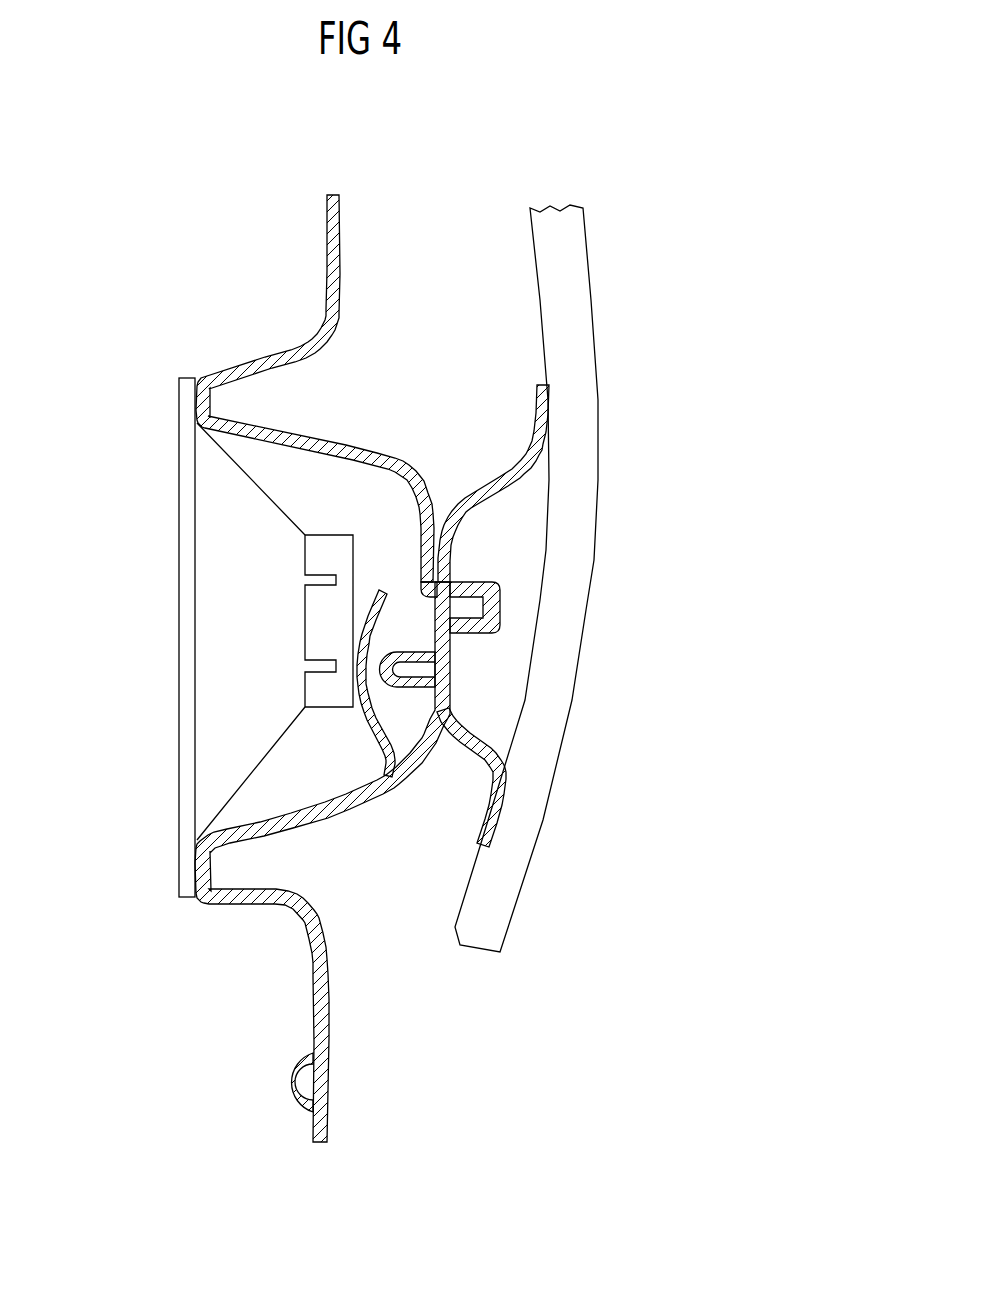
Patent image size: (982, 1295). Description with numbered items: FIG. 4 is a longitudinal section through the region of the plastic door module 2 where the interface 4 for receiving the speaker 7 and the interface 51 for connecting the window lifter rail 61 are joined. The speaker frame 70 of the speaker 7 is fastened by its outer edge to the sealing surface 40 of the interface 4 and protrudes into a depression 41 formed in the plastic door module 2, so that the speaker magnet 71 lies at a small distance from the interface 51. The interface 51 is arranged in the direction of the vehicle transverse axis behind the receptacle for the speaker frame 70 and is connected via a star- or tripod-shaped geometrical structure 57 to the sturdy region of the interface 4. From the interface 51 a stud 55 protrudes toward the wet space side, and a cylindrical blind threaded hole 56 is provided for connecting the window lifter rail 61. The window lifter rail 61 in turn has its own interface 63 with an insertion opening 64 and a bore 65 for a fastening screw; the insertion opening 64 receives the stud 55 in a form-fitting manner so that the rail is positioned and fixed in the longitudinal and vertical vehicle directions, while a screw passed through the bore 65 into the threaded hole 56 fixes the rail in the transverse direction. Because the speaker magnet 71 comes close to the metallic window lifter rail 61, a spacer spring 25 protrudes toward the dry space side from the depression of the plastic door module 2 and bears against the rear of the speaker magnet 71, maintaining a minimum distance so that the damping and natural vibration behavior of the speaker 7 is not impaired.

The plastic door module 2 is at (335, 240).
The interface for receiving the speaker 4 is at (250, 957).
The speaker 7 is at (179, 637).
The spacer spring 25 is at (368, 720).
The sealing surface 40 is at (202, 392).
The depression 41 is at (328, 487).
The interface for connecting the window lifter rail 51 is at (435, 805).
The stud 55 is at (502, 610).
The threaded hole 56 is at (445, 675).
The star- or tripod-shaped geometrical structure 57 is at (421, 662).
The window lifter rail 61 is at (578, 327).
The interface of the window lifter rail 63 is at (497, 490).
The insertion opening 64 is at (450, 580).
The bore 65 is at (445, 667).
The speaker frame 70 is at (235, 752).
The speaker magnet 71 is at (320, 560).